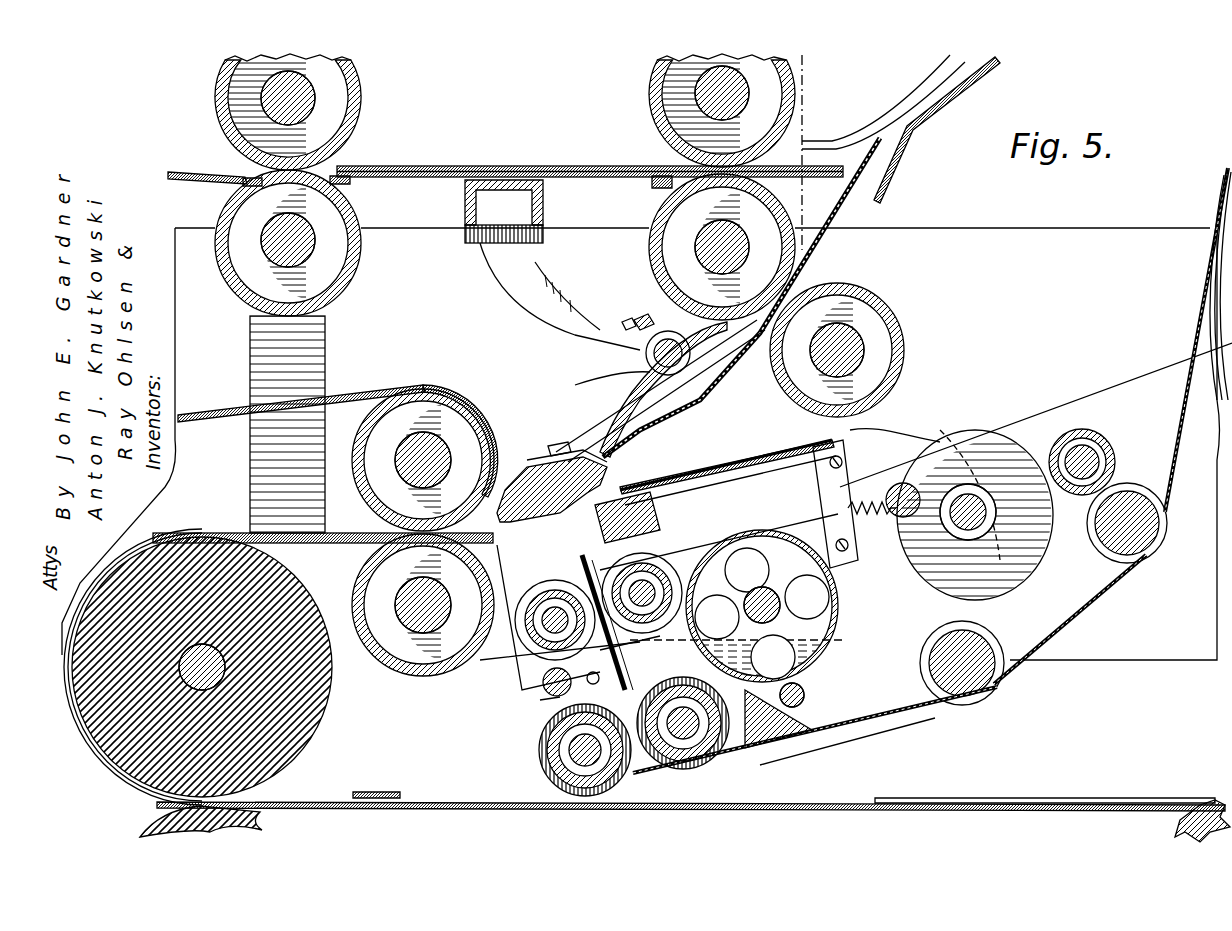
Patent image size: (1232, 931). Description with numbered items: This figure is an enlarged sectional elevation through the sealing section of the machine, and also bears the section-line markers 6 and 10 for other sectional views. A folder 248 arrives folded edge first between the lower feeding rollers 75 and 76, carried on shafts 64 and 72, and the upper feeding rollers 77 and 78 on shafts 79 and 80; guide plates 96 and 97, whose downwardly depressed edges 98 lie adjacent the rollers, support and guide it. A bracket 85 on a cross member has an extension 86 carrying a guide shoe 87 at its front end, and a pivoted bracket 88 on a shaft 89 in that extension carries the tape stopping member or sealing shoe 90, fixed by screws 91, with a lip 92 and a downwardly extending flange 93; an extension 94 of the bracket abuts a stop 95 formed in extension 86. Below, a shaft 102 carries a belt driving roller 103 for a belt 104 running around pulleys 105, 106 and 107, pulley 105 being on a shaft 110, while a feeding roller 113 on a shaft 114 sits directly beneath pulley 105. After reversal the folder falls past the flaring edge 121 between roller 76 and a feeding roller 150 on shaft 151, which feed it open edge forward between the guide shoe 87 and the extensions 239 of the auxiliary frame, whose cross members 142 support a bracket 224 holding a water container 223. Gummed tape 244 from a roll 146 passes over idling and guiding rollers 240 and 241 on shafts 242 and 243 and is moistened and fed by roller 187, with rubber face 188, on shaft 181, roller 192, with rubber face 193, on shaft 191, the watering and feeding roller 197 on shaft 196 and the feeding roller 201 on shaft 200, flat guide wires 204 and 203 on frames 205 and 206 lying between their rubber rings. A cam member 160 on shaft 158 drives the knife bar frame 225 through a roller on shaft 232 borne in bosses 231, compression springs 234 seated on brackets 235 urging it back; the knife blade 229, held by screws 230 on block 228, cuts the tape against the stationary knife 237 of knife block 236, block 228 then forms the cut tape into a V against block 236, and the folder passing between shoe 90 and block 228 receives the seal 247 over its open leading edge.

The section line 6- 6 is at (800, 64).
The web 10 is at (1152, 418).
The shaft 64 is at (313, 257).
The shaft 72 is at (740, 240).
The feeding roller 75 is at (305, 243).
The feeding roller 76 is at (692, 247).
The upper feeding roller 77 is at (315, 112).
The upper feeding roller 78 is at (701, 110).
The shaft 79 is at (315, 106).
The shaft 80 is at (718, 118).
The bracket 85 is at (545, 206).
The extension 86 is at (570, 292).
The guide shoe 87 is at (680, 347).
The pivoted bracket 88 is at (615, 395).
The shaft 89 is at (645, 355).
The tape stopping member 90 is at (530, 462).
The screws 91 is at (552, 446).
The lip 92 is at (663, 389).
The flange 93 is at (686, 449).
The extension 94 is at (658, 310).
The stop 95 is at (640, 316).
The guide plate 96 is at (182, 186).
The guide plate 97 is at (440, 178).
The downwardly depressed edges 98 is at (227, 180).
The shaft 102 is at (220, 667).
The belt driving roller 103 is at (215, 682).
The belt 104 is at (290, 541).
The pulley 105 is at (423, 447).
The pulley 106 is at (260, 828).
The pulley 107 is at (1183, 818).
The shaft 110 is at (407, 440).
The feeding roller 113 is at (423, 620).
The shaft 114 is at (440, 625).
The flaring edge 121 is at (893, 100).
The cross members 142 is at (1081, 430).
The roll of gummed sealing tape 146 is at (1212, 210).
The feeding roller 150 is at (865, 350).
The shaft 151 is at (866, 352).
The shaft 158 is at (983, 497).
The cam member 160 is at (975, 494).
The shaft 181 is at (668, 786).
The feeding roller 187 is at (712, 757).
The face 188 is at (700, 738).
The shaft 191 is at (557, 750).
The feeding roller 192 is at (556, 757).
The face 193 is at (562, 776).
The shaft 196 is at (668, 578).
The watering and feeding roller 197 is at (708, 562).
The shaft 200 is at (540, 656).
The feeding roller 201 is at (545, 668).
The guide wires 203 is at (540, 681).
The guide wires 204 is at (632, 653).
The frame 205 is at (627, 676).
The frame 206 is at (545, 718).
The water container 223 is at (836, 664).
The bracket 224 is at (822, 752).
The knife bar frame 225 is at (716, 505).
The block 228 is at (544, 594).
The knife blade 229 is at (548, 592).
The screws 230 is at (545, 568).
The bosses 231 is at (912, 487).
The shaft 232 is at (903, 483).
The compression springs 234 is at (868, 556).
The brackets 235 is at (891, 445).
The stationary knife block 236 is at (727, 483).
The stationary knife 237 is at (695, 513).
The extensions 239 is at (715, 436).
The idling and guiding roller 240 is at (1142, 556).
The idling and guiding roller 241 is at (994, 648).
The shaft 242 is at (1162, 536).
The shaft 243 is at (1002, 686).
The strip of gummed tape 244 is at (1197, 309).
The seal 247 is at (378, 792).
The folder 248 is at (545, 165).